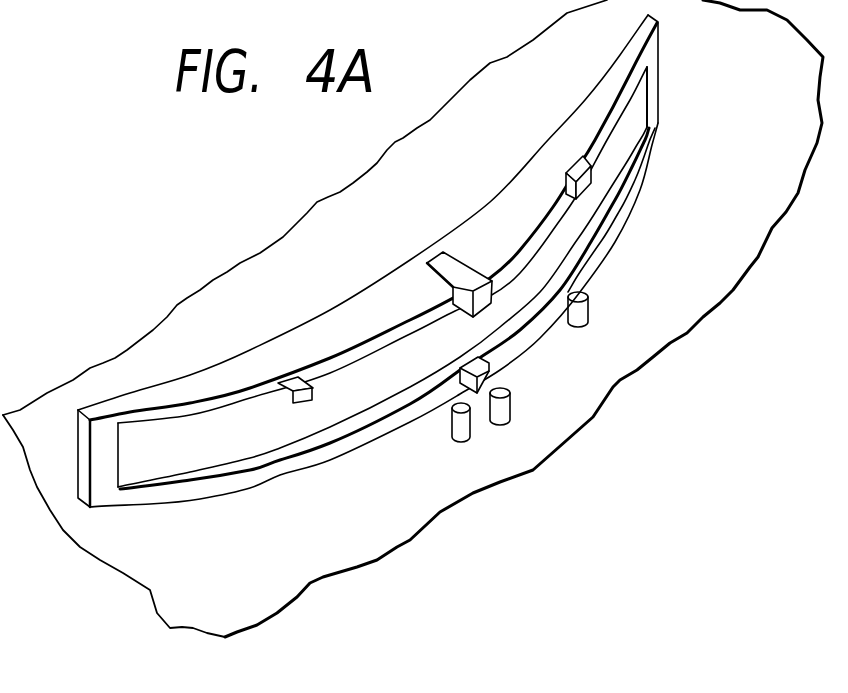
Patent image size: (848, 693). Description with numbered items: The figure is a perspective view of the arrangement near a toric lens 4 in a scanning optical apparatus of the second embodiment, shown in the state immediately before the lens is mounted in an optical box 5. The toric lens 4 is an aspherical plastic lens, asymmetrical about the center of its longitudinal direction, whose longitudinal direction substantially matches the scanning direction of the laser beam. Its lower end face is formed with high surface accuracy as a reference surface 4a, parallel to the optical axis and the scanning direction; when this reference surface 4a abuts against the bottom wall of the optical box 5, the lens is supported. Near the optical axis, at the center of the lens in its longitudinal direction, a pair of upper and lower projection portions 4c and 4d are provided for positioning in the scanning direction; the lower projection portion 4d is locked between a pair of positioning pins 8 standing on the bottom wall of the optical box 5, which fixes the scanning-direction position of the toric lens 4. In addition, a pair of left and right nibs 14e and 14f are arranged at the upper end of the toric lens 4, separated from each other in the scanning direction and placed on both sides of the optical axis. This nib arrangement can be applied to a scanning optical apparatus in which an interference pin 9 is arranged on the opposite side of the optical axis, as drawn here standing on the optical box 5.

The toric lens 4 is at (492, 129).
The reference surface 4a is at (244, 494).
The upper projection portion 4c is at (465, 277).
The lower projection portion 4d is at (483, 370).
The optical box 5 is at (100, 568).
The positioning pins 8 is at (503, 423).
The interference pin 9 is at (590, 313).
The nib 14e is at (572, 168).
The nib 14f is at (291, 380).